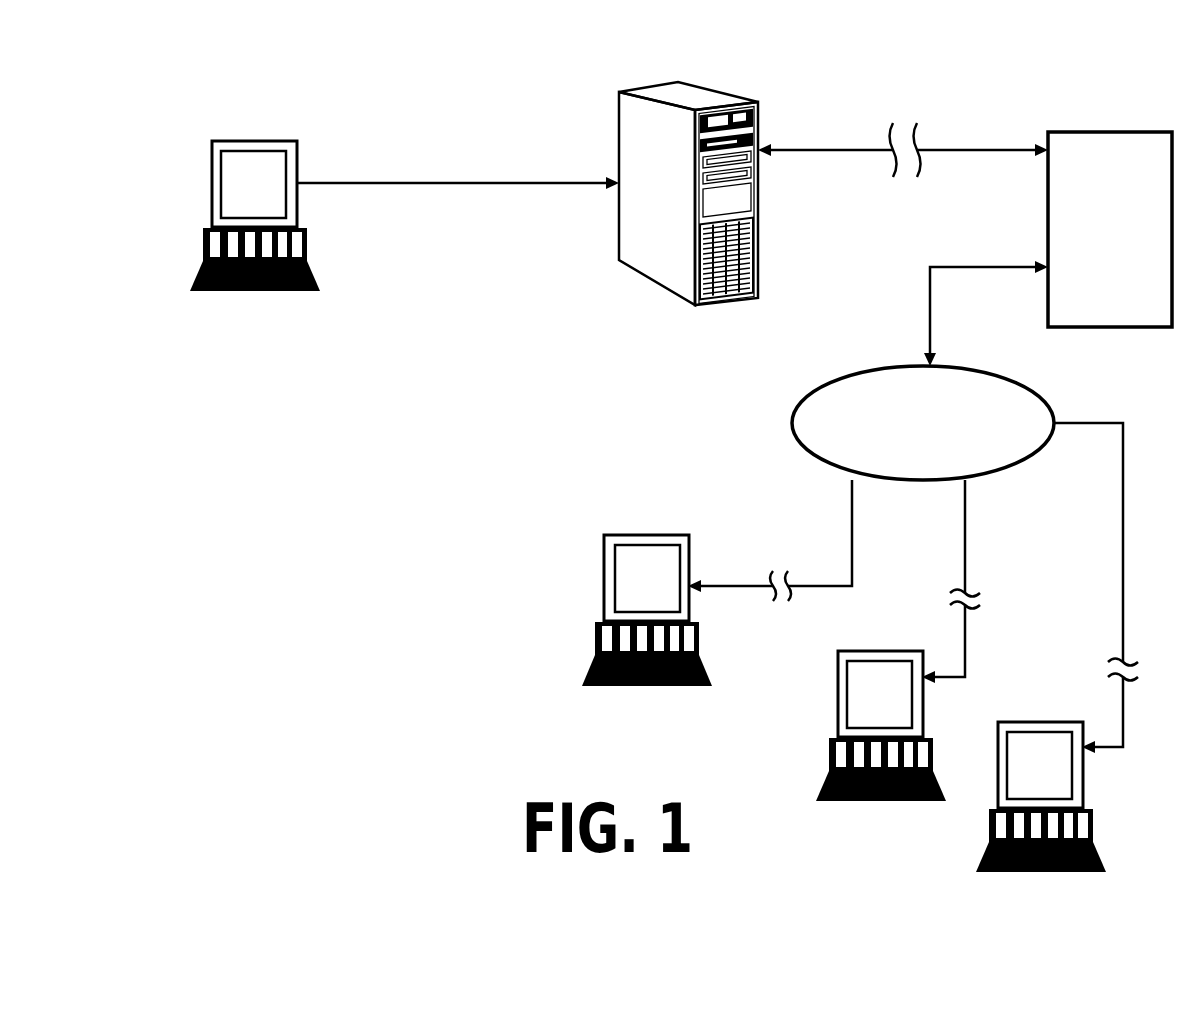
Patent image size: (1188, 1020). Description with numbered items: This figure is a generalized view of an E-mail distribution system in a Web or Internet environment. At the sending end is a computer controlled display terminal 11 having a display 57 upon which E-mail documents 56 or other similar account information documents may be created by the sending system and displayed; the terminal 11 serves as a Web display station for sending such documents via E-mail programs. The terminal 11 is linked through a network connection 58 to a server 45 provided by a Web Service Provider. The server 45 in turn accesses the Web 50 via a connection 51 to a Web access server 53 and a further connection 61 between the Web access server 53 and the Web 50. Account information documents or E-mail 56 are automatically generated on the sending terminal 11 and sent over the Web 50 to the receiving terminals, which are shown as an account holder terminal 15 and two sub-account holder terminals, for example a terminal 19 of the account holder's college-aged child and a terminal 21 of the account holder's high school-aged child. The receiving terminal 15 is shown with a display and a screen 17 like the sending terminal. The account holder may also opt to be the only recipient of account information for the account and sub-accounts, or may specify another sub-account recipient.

The computer controlled display terminal 11 is at (292, 190).
The E-mail documents 56 is at (248, 165).
The display 57 is at (228, 158).
The connection 58 is at (424, 183).
The server 45 is at (650, 132).
The connection 51 is at (977, 150).
The Web access server 53 is at (1123, 310).
The connection 61 is at (931, 310).
The Web 50 is at (850, 377).
The receiving terminal 15 is at (632, 582).
The display screen 17 is at (640, 558).
The receiving terminal 19 is at (838, 708).
The receiving terminal 21 is at (998, 822).